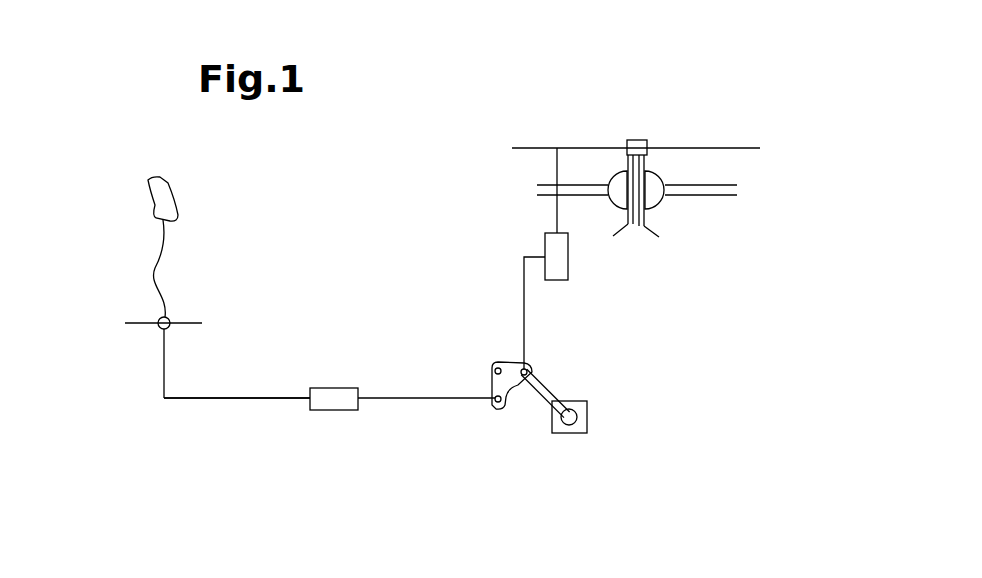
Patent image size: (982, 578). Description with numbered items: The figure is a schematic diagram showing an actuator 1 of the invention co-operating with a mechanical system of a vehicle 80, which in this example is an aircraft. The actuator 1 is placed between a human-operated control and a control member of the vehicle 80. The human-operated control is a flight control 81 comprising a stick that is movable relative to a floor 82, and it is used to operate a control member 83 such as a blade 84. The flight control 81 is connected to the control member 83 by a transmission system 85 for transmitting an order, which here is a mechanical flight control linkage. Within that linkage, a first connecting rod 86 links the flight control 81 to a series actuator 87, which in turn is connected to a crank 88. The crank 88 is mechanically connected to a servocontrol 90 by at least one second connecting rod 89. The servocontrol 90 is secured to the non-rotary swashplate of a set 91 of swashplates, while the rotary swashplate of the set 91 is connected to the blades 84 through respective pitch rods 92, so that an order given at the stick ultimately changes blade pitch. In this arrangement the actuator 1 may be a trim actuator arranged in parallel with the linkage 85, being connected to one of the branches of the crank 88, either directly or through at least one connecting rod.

The actuator 1 is at (612, 441).
The vehicle 80 is at (158, 408).
The flight control 81 is at (158, 237).
The floor 82 is at (137, 323).
The control member 83 is at (536, 148).
The blade 84 is at (536, 147).
The transmission system 85 is at (133, 356).
The first connecting rod 86 is at (205, 398).
The series actuator 87 is at (328, 388).
The crank 88 is at (490, 350).
The second connecting rod 89 is at (524, 313).
The servocontrol 90 is at (568, 256).
The set of swashplates 91 is at (510, 196).
The pitch rods 92 is at (557, 170).